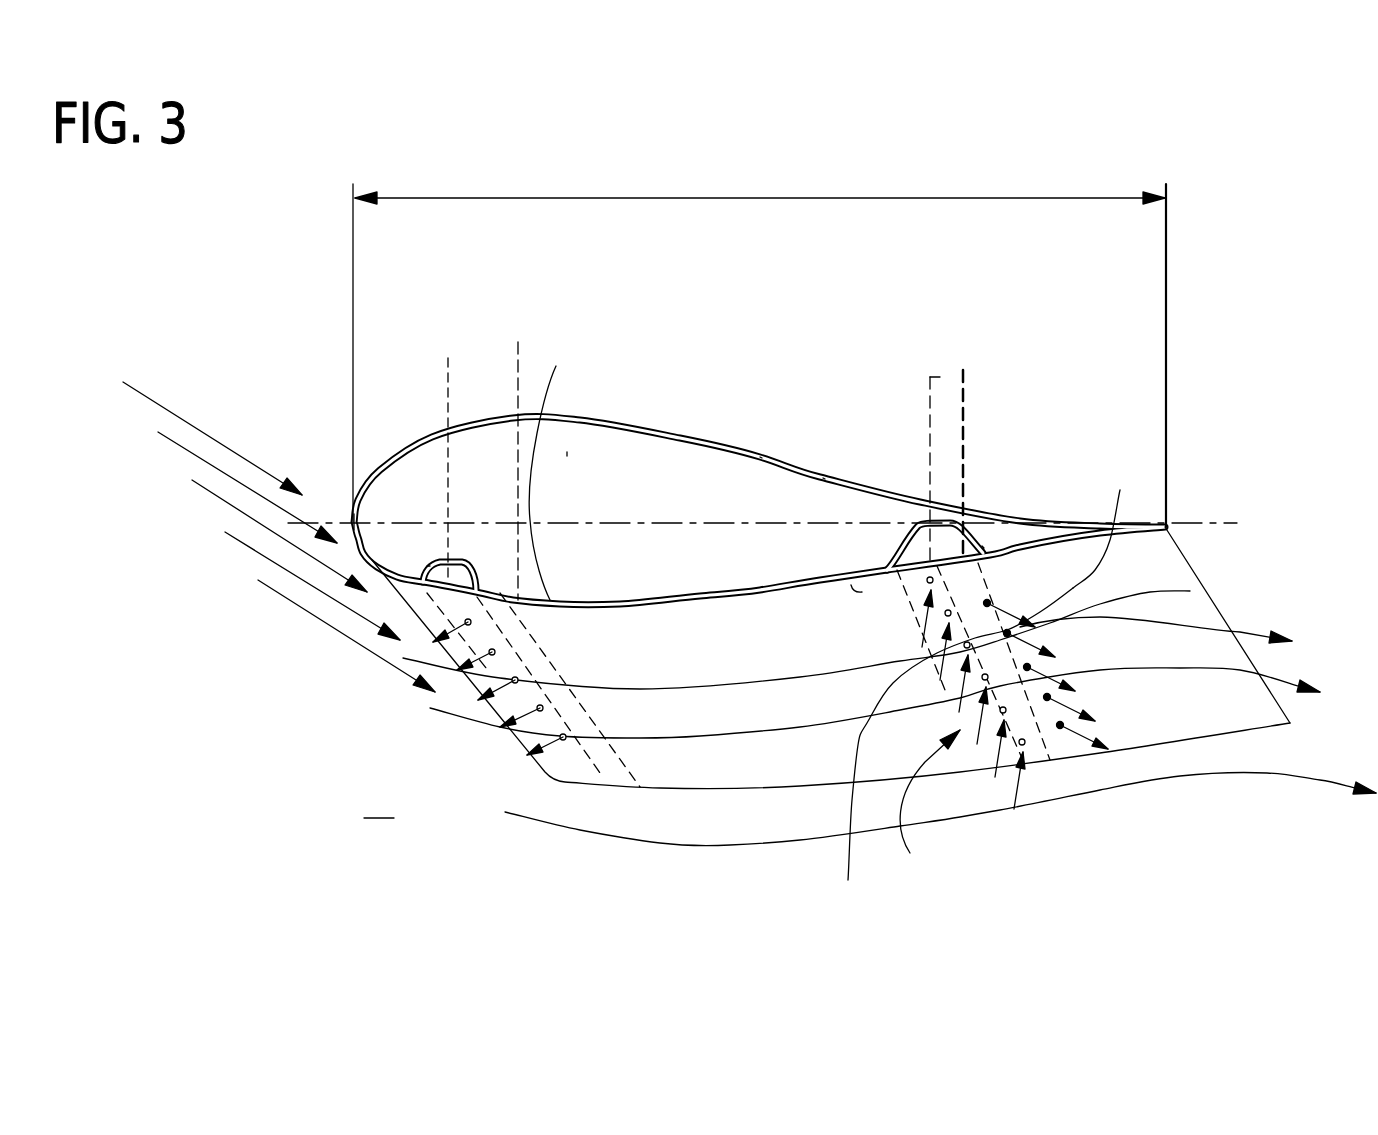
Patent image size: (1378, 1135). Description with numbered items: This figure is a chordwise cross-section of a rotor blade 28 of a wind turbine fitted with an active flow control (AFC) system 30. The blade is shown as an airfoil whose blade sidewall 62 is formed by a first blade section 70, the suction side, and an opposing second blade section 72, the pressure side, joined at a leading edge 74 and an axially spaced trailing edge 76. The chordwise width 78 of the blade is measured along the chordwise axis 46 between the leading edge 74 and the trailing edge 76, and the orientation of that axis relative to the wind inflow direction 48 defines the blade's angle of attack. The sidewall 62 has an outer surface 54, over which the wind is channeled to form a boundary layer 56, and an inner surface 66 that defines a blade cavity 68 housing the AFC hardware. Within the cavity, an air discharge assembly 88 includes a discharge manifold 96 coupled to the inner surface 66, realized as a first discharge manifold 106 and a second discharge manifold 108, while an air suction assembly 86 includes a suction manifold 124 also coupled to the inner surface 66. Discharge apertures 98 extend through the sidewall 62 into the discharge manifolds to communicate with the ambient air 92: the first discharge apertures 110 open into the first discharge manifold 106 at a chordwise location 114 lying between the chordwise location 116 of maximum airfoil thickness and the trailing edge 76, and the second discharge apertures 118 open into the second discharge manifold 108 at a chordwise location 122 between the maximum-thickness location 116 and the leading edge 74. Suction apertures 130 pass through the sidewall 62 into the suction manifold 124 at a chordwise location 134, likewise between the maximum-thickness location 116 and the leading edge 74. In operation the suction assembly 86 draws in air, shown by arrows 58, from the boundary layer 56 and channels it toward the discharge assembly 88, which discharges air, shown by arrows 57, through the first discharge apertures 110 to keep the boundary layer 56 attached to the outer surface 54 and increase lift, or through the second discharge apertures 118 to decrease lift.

The rotor blade 28 is at (383, 315).
The AFC system 30 is at (745, 330).
The chordwise axis 46 is at (1212, 527).
The wind inflow direction 48 is at (168, 408).
The outer surface 54 is at (851, 585).
The boundary layer 56 is at (1262, 630).
The discharged air 57 is at (1105, 522).
The drawn-in air 58 is at (1020, 792).
The blade sidewall 62 is at (760, 457).
The inner surface 66 is at (685, 430).
The blade cavity 68 is at (567, 452).
The first blade section 70 is at (783, 758).
The second blade section 72 is at (823, 478).
The leading edge 74 is at (358, 526).
The trailing edge 76 is at (1190, 556).
The chordwise width 78 is at (703, 197).
The air suction assembly 86 is at (930, 807).
The air discharge assembly 88 is at (1105, 726).
The ambient air 92 is at (378, 808).
The discharge manifold 96 is at (982, 546).
The discharge apertures 98 is at (990, 603).
The first discharge manifold 106 is at (983, 552).
The second discharge manifold 108 is at (427, 566).
The first discharge apertures 110 is at (1190, 591).
The chordwise location 114 is at (966, 397).
The chordwise location of maximum airfoil thickness 116 is at (518, 340).
The second discharge apertures 118 is at (543, 712).
The chordwise location 122 is at (448, 356).
The suction manifold 124 is at (912, 500).
The suction apertures 130 is at (947, 747).
The chordwise location 134 is at (935, 378).